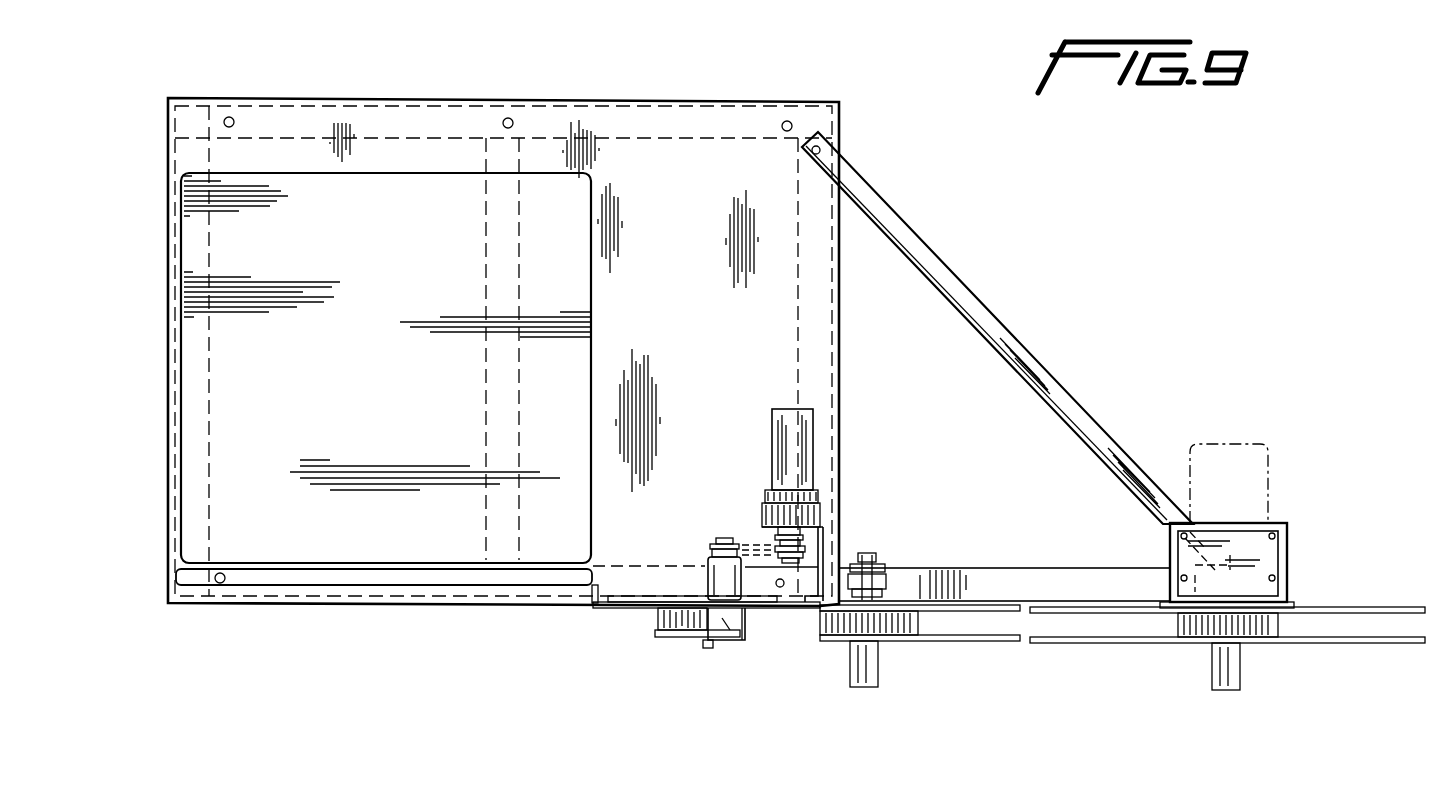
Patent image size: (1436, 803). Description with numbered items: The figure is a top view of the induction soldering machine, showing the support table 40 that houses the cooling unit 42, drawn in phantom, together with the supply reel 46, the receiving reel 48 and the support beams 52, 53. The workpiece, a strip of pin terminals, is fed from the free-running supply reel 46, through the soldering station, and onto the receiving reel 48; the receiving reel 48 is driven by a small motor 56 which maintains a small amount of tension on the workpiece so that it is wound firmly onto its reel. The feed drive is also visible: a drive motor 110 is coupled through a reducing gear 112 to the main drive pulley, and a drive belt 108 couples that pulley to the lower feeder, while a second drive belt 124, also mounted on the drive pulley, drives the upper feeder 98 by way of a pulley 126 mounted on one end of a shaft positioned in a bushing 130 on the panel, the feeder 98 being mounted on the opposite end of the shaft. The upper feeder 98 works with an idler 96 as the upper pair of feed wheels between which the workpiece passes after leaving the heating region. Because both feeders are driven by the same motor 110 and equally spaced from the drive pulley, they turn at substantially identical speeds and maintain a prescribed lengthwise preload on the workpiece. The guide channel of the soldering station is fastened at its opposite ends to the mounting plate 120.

The support table 40 is at (545, 120).
The cooling unit 42 is at (303, 212).
The supply reel 46 is at (965, 641).
The receiving reel 48 is at (1313, 645).
The support beam 52 is at (1283, 583).
The support beam 53 is at (1080, 588).
The motor 56 is at (1243, 468).
The idler 96 is at (668, 637).
The feeder 98 is at (727, 623).
The drive belt 108 is at (764, 570).
The drive motor 110 is at (780, 430).
The reducing gear 112 is at (766, 540).
The mounting plate 120 is at (600, 610).
The drive belt 124 is at (758, 545).
The pulley 126 is at (722, 540).
The bushing 130 is at (708, 582).